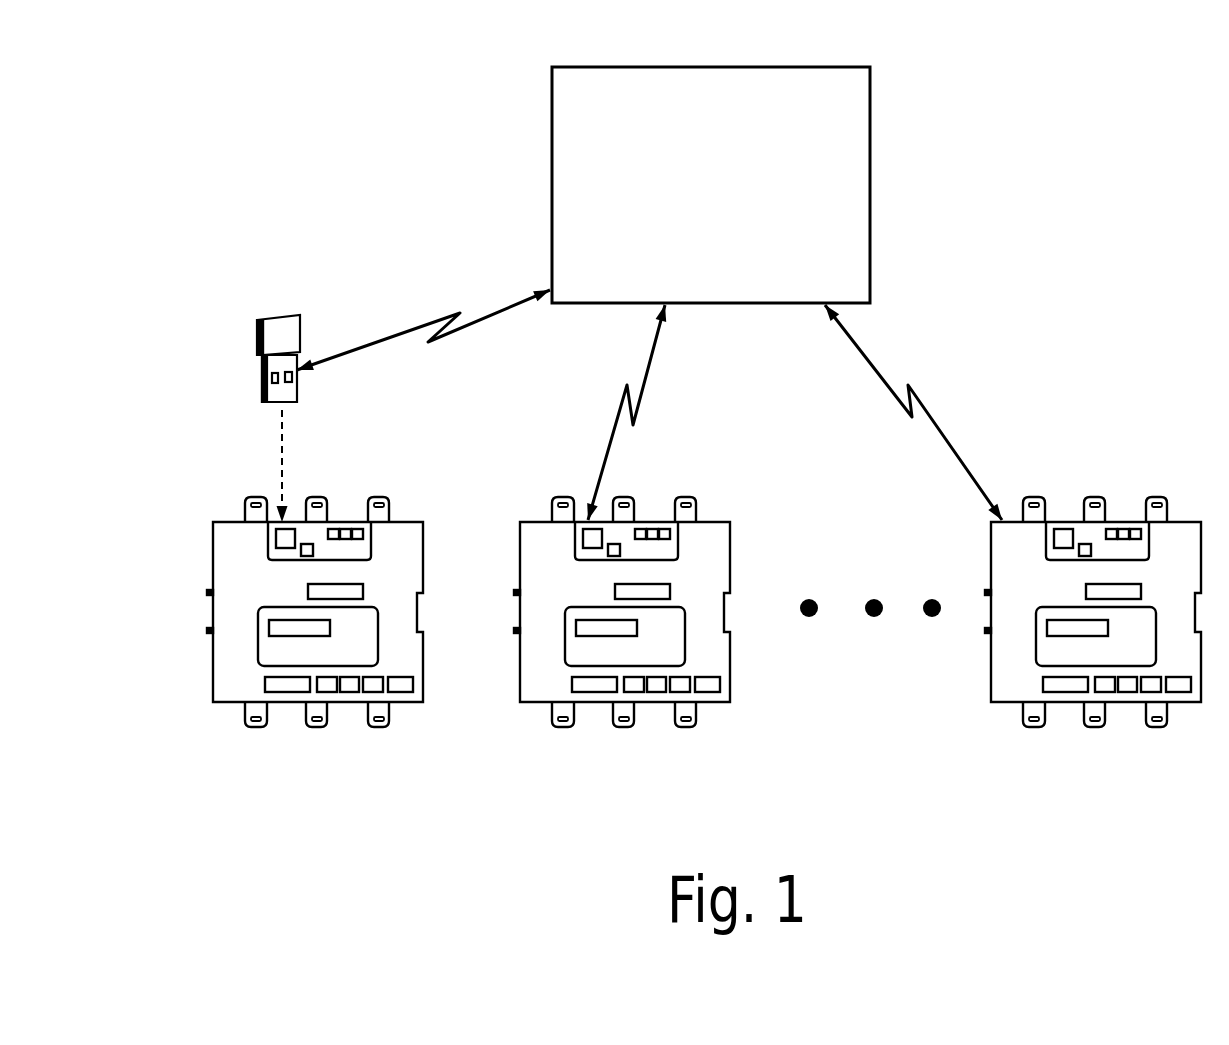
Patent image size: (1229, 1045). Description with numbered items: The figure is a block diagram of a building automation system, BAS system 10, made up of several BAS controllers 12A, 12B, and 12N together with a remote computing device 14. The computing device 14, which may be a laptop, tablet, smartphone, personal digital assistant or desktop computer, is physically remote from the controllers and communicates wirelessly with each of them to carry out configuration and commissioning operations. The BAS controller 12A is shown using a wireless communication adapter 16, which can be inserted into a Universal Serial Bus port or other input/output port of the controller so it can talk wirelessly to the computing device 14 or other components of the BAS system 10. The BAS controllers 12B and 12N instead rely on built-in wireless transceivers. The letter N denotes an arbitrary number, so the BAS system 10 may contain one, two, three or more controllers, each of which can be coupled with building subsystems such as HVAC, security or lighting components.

The BAS system 10 is at (453, 110).
The remote computing device 14 is at (695, 240).
The wireless communication adapter 16 is at (280, 315).
The BAS controller 12A is at (212, 682).
The BAS controller 12B is at (519, 682).
The BAS controller 12N is at (990, 682).